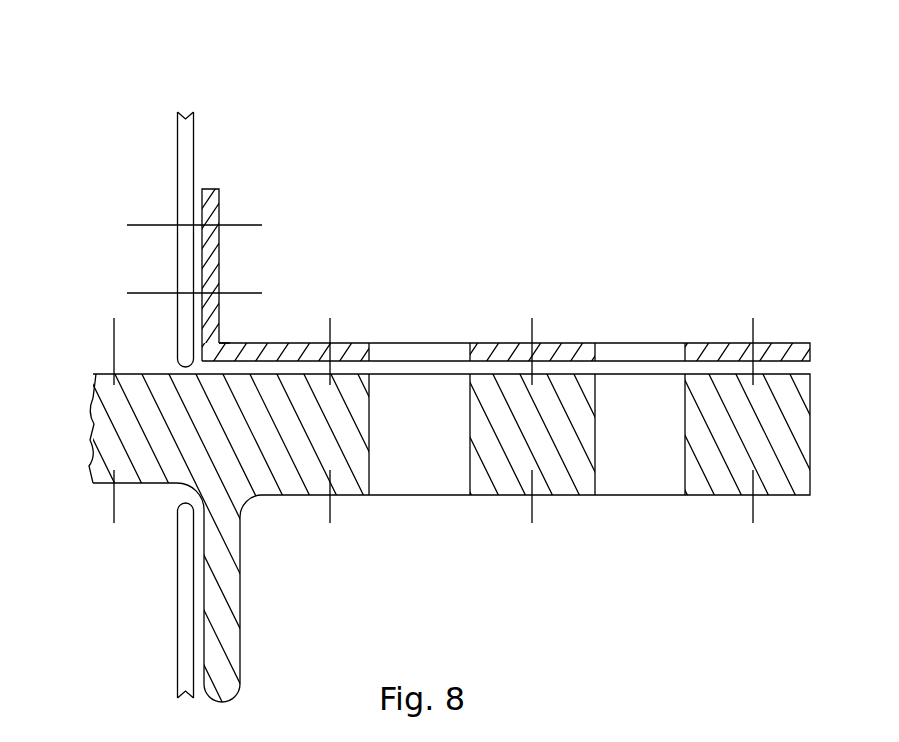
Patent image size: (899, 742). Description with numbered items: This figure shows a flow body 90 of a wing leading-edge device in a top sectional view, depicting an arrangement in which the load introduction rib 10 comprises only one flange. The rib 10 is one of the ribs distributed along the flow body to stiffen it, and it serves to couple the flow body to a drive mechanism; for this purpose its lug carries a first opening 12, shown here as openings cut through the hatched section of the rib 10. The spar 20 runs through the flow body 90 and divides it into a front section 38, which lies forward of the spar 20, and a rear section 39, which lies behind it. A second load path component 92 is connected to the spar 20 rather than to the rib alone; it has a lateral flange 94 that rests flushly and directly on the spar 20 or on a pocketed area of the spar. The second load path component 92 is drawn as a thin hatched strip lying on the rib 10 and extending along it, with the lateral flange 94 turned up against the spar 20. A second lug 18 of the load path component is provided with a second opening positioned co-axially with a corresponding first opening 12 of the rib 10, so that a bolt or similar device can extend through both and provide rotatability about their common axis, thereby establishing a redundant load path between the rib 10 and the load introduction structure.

The load introduction rib 10 is at (112, 376).
The first opening 12 is at (418, 472).
The second lug 18 is at (438, 353).
The spar 20 is at (192, 124).
The front section 38 is at (85, 224).
The rear section 39 is at (553, 201).
The flow body 90 is at (129, 103).
The second load path component 92 is at (277, 347).
The lateral flange 94 is at (218, 241).